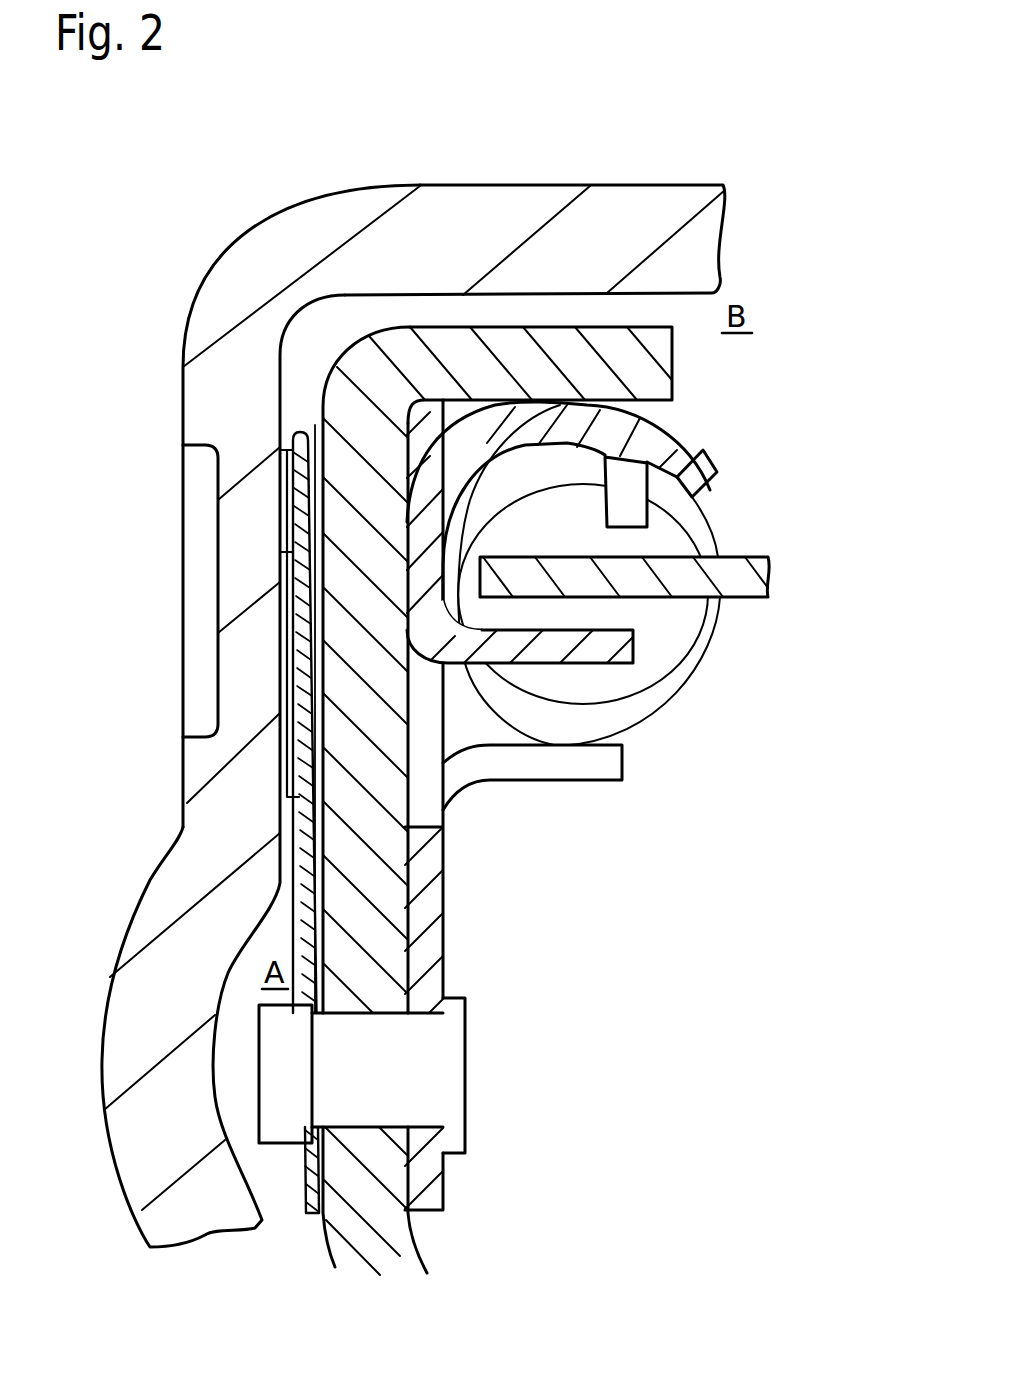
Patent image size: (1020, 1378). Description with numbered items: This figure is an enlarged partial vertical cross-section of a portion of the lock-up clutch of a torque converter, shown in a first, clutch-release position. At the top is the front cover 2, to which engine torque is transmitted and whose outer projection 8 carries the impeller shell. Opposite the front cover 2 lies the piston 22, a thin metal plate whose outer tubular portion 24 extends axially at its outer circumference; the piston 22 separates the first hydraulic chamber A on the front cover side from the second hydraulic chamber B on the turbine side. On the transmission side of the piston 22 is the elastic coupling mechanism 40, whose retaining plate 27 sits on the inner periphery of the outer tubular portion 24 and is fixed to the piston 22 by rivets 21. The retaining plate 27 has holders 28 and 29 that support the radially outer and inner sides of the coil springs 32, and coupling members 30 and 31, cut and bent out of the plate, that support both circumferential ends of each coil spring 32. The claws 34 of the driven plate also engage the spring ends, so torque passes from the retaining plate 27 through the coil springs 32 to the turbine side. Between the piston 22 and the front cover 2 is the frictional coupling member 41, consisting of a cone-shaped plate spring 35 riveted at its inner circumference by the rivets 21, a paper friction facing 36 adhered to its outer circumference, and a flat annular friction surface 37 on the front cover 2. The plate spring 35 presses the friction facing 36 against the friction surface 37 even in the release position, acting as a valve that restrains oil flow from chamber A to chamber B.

The front cover 2 is at (230, 778).
The outer projection 8 is at (682, 257).
The rivets 21 is at (412, 1078).
The piston 22 is at (383, 907).
The outer tubular portion 24 is at (642, 382).
The retaining plate 27 is at (423, 860).
The holders 28 is at (677, 450).
The holders 29 is at (590, 763).
The coupling member 30 is at (630, 497).
The coupling member 31 is at (600, 650).
The coil springs 32 is at (713, 653).
The claws 34 is at (630, 582).
The plate spring 35 is at (307, 562).
The friction facing 36 is at (287, 467).
The friction surface 37 is at (292, 657).
The elastic coupling mechanism 40 is at (750, 537).
The frictional coupling member 41 is at (253, 541).